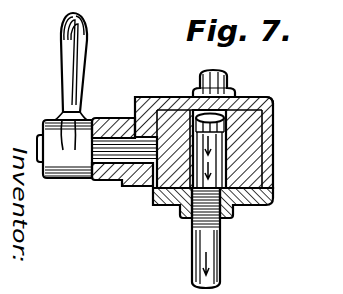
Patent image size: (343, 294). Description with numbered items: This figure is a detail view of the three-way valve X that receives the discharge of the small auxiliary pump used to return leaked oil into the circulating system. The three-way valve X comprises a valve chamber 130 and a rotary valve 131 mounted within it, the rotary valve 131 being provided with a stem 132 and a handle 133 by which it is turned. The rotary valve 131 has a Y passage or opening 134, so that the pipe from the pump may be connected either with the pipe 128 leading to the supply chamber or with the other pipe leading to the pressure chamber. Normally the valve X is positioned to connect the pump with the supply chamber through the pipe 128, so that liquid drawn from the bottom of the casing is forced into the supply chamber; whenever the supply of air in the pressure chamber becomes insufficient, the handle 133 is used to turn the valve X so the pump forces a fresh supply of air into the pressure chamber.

The pipe 128 is at (215, 257).
The valve chamber 130 is at (273, 159).
The rotary valve 131 is at (162, 195).
The stem 132 is at (122, 150).
The handle 133 is at (60, 56).
The Y passage 134 is at (215, 143).
The three-way valve X is at (266, 102).